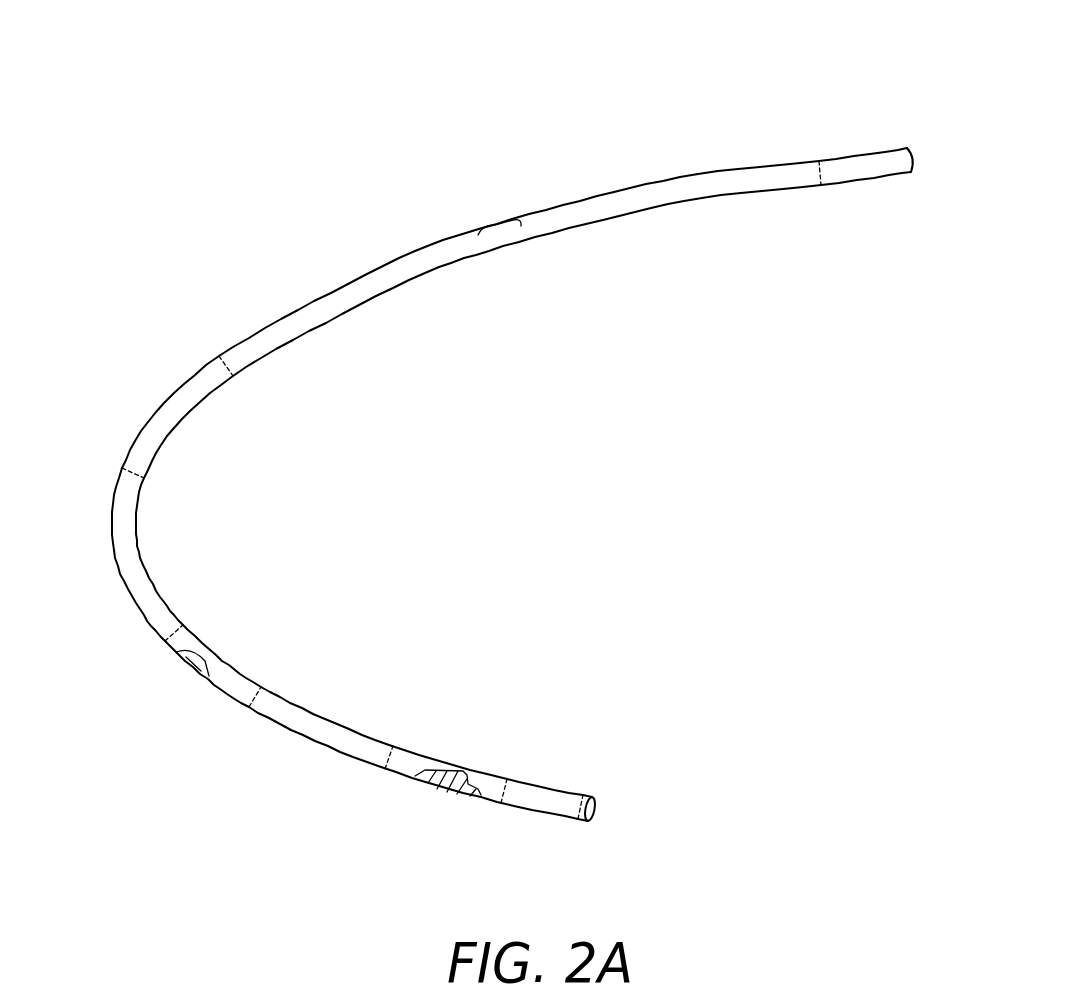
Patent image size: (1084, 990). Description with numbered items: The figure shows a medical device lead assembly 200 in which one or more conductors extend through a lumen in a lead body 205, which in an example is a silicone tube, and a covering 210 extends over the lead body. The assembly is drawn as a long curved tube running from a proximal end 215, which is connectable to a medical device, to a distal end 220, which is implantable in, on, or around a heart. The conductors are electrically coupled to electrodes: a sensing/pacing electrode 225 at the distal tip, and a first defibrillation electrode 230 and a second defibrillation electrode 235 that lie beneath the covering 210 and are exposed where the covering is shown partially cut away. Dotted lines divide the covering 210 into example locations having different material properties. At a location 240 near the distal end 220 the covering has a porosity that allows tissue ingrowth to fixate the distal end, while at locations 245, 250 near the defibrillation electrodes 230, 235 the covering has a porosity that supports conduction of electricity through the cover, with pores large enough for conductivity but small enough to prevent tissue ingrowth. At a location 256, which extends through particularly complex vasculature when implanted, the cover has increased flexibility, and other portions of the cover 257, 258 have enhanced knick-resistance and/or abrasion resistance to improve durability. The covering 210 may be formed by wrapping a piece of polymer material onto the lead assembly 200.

The medical device lead assembly 200 is at (757, 32).
The lead body 205 is at (503, 222).
The covering 210 is at (594, 222).
The proximal end 215 is at (895, 174).
The distal end 220 is at (568, 793).
The sensing/pacing electrode 225 is at (601, 809).
The first defibrillation electrode 230 is at (440, 790).
The second defibrillation electrode 235 is at (194, 675).
The location near the distal end 240 is at (551, 818).
The location near the first defibrillation electrode 245 is at (496, 778).
The location near the second defibrillation electrode 250 is at (242, 672).
The location of increased flexibility 256 is at (310, 742).
The portion of the cover with enhanced knick-resistance 257 is at (112, 501).
The portion of the cover with enhanced knick-resistance 258 is at (463, 258).